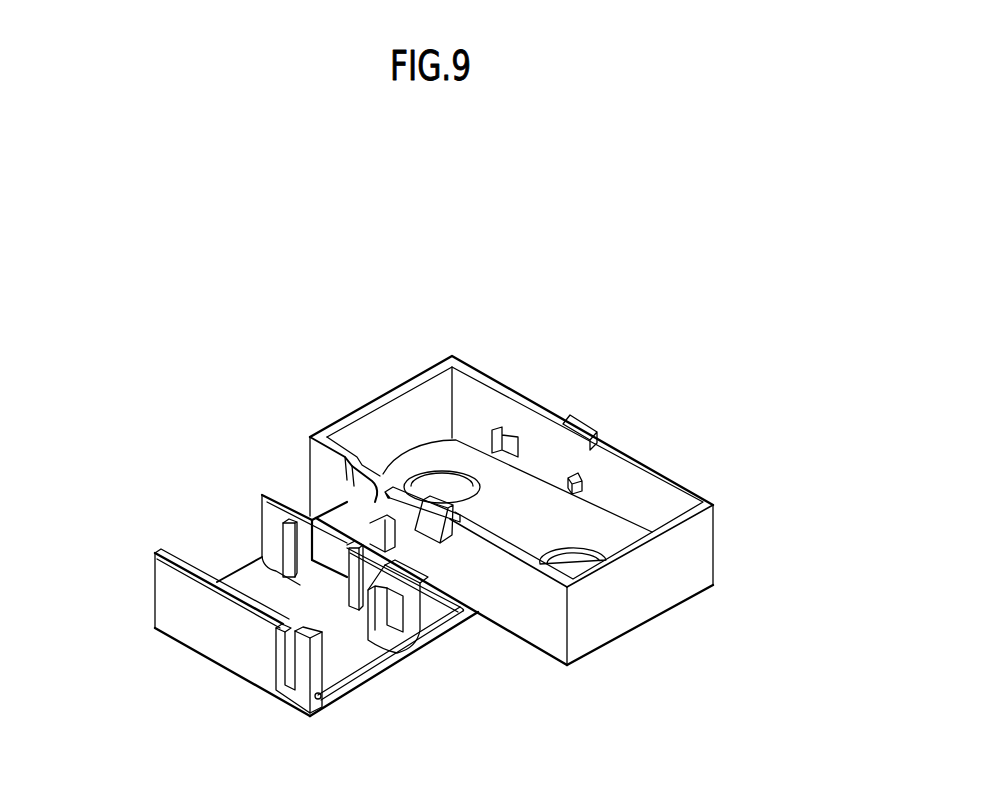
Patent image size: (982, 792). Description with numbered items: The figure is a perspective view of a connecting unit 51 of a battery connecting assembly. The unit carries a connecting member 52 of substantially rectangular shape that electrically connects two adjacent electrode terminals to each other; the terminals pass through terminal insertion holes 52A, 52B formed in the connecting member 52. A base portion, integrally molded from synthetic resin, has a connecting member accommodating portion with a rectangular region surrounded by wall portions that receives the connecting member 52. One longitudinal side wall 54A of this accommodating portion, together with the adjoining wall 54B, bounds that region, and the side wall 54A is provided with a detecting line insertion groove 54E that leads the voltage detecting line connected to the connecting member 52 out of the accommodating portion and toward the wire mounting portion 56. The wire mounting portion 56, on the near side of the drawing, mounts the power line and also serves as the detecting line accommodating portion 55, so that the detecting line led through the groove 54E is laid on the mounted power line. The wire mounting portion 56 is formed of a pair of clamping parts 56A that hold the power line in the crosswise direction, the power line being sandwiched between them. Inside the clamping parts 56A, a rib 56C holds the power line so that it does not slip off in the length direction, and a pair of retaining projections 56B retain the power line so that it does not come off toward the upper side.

The connecting unit 51 is at (581, 266).
The connecting member 52 is at (607, 511).
The terminal insertion hole 52A is at (460, 476).
The terminal insertion hole 52B is at (590, 558).
The side wall 54A is at (537, 630).
The right side wall 54B is at (660, 478).
The detecting line insertion groove 54E is at (377, 484).
The detecting line accommodating portion 55 is at (383, 652).
The wire mounting portion 56 is at (178, 553).
The clamping parts 56A is at (157, 553).
The retaining projections 56B is at (368, 618).
The rib 56C is at (262, 560).